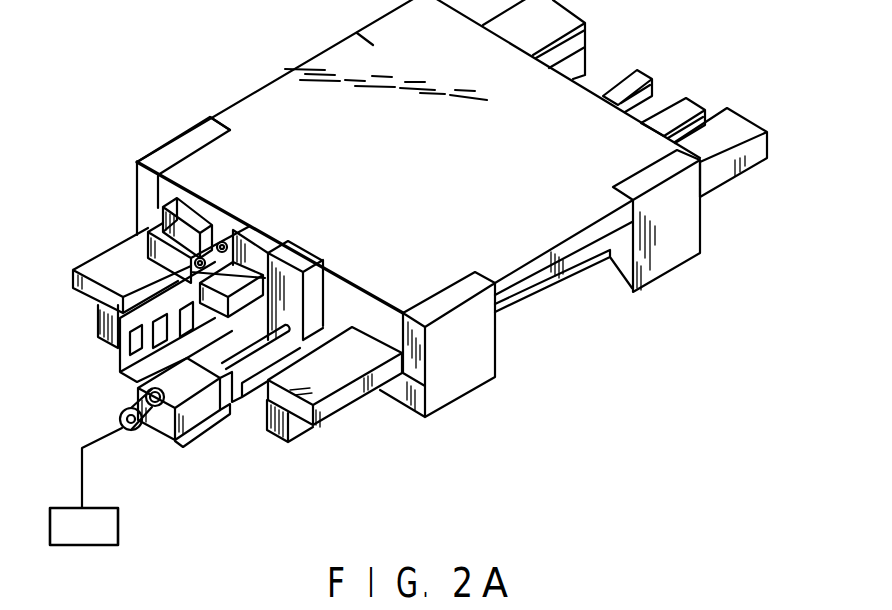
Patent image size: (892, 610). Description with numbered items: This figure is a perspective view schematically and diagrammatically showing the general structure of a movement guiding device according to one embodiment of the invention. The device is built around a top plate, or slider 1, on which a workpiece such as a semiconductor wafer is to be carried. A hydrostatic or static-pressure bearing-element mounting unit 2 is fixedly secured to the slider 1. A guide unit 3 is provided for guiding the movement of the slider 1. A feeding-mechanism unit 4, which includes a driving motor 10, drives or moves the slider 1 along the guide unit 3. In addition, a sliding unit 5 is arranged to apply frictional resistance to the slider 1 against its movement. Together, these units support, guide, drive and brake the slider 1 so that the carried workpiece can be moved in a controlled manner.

The top plate (slider) 1 is at (270, 103).
The hydrostatic bearing-element mounting unit 2 is at (180, 148).
The guide unit 3 is at (342, 398).
The feeding-mechanism unit 4 is at (199, 400).
The sliding unit 5 is at (162, 238).
The driving motor 10 is at (118, 527).